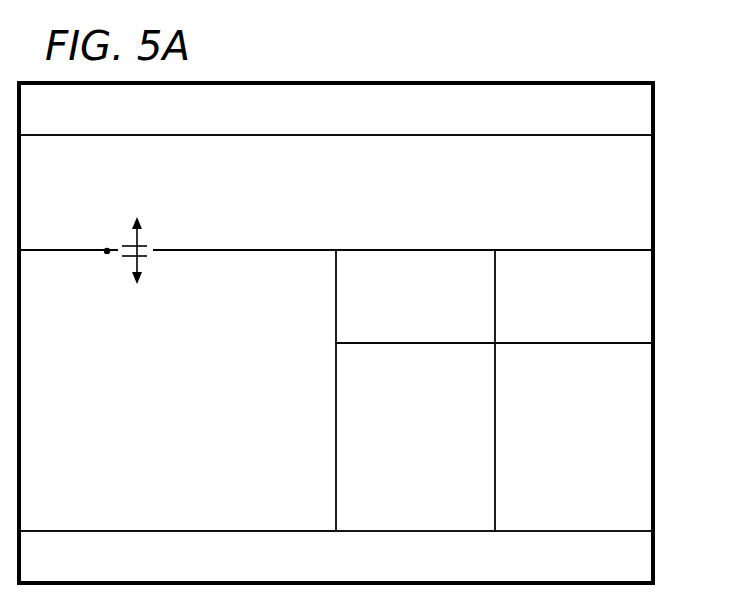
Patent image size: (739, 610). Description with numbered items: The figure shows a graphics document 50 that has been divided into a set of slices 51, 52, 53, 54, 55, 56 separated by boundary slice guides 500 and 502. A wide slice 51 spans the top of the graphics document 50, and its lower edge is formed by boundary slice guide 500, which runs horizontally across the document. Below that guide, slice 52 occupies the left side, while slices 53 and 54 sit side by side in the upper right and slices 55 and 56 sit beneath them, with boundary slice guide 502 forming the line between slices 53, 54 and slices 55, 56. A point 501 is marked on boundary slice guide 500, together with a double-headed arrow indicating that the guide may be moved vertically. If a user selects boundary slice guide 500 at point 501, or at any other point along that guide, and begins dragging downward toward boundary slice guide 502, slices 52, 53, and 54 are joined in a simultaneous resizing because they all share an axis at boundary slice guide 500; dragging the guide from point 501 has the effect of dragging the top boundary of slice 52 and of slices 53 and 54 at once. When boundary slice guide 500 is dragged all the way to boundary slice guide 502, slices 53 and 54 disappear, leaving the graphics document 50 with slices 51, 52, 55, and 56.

The graphics document 50 is at (532, 58).
The slice 51 is at (350, 197).
The slice 52 is at (192, 455).
The slice 53 is at (429, 307).
The slice 54 is at (589, 306).
The slice 55 is at (430, 452).
The slice 56 is at (589, 452).
The boundary slice guide 500 is at (568, 248).
The point 501 is at (106, 246).
The boundary slice guide 502 is at (579, 345).